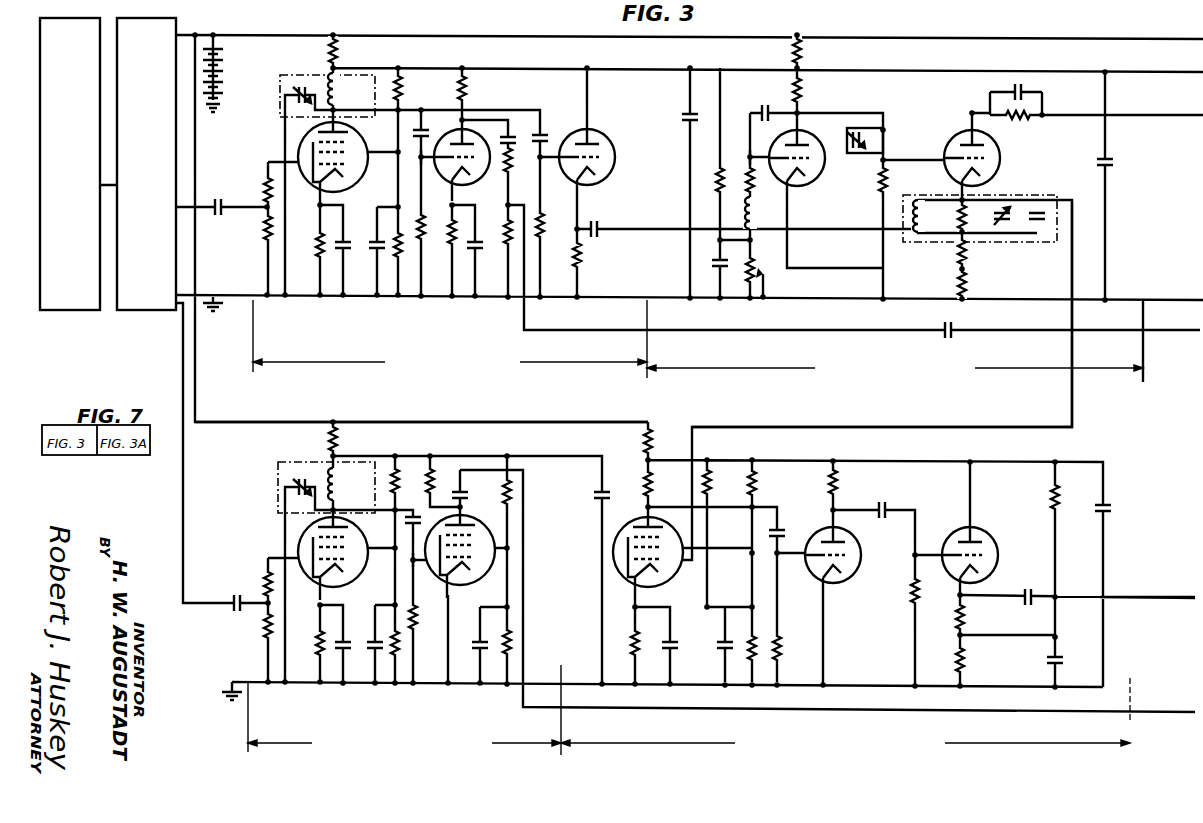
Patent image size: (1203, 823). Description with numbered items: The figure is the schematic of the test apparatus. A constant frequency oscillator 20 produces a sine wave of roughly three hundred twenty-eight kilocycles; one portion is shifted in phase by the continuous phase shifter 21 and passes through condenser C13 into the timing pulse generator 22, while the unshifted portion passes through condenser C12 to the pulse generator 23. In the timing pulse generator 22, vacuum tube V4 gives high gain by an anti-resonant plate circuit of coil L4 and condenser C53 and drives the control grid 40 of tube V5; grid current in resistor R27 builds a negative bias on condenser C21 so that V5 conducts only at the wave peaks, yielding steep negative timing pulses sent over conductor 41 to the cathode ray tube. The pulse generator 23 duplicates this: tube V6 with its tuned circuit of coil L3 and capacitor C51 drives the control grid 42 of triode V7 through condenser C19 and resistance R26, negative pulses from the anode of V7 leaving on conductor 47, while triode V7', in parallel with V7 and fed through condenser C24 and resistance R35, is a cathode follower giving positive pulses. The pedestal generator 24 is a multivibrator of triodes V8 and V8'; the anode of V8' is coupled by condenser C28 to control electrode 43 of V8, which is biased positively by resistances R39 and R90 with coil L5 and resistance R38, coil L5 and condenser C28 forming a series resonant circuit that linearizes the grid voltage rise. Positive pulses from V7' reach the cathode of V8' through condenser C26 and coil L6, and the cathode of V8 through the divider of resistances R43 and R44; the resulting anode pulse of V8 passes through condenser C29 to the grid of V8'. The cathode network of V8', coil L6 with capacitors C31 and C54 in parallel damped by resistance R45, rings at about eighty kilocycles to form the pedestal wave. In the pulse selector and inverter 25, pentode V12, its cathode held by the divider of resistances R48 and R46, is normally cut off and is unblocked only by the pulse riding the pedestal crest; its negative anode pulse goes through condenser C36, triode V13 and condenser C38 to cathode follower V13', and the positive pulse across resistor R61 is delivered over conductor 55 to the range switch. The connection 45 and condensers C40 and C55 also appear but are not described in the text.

The constant frequency oscillator 20 is at (78, 312).
The continuous phase shifter 21 is at (157, 312).
The timing pulse generator 22 is at (404, 710).
The pulse generator 23 is at (450, 339).
The pedestal generator 24 is at (895, 341).
The pulse selector and inverter 25 is at (845, 735).
The control grid 40 is at (415, 566).
The conductor 41 is at (1170, 713).
The control grid 42 is at (422, 162).
The control electrode 43 is at (757, 166).
The lead from pedestal generator 45 is at (1074, 392).
The conductor 47 is at (1180, 333).
The conductor 55 is at (1170, 597).
The condenser C12 is at (216, 200).
The condenser C13 is at (232, 594).
The condenser C19 is at (428, 124).
The condenser C21 is at (423, 507).
The condenser C24 is at (544, 136).
The condenser C26 is at (596, 238).
The coupling condenser C28 is at (763, 104).
The condenser C29 is at (887, 143).
The capacitor C31 is at (1041, 205).
The coupling condenser C36 is at (784, 527).
The condenser C38 is at (885, 498).
The capacitor C40 is at (1025, 605).
The capacitor C51 is at (302, 88).
The condenser C53 is at (302, 477).
The capacitor C54 is at (996, 206).
The capacitor C55 is at (944, 320).
The inductance coil L3 is at (339, 96).
The coil L4 is at (339, 487).
The inductance coil L5 is at (756, 214).
The inductance coil L6 is at (912, 231).
The resistance R26 is at (423, 243).
The resistor R27 is at (416, 621).
The resistance R35 is at (543, 215).
The resistance R38 is at (746, 170).
The resistance R39 is at (716, 178).
The resistance R43 is at (968, 287).
The resistance R44 is at (969, 260).
The resistance R45 is at (956, 210).
The resistance R46 is at (630, 655).
The resistance R48 is at (713, 480).
The resistor R61 is at (955, 612).
The resistance R90 is at (764, 268).
The vacuum tube V4 is at (352, 577).
The vacuum tube V5 is at (470, 583).
The vacuum tube V6 is at (355, 181).
The triode V7 is at (463, 165).
The triode V7' is at (592, 165).
The triode V8 is at (799, 166).
The triode V8' is at (983, 166).
The pentode V12 is at (656, 585).
The triode V13 is at (836, 565).
The triode V13' is at (984, 559).